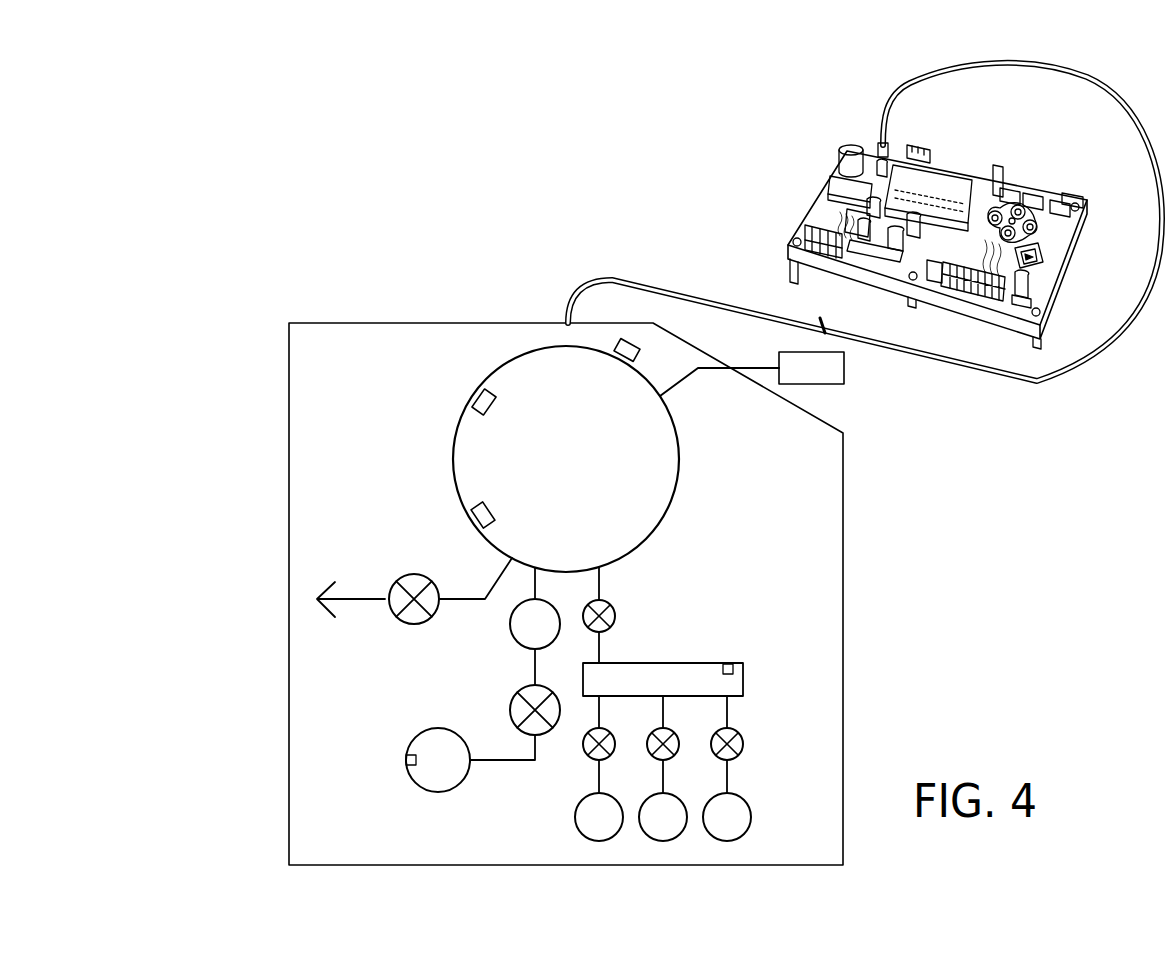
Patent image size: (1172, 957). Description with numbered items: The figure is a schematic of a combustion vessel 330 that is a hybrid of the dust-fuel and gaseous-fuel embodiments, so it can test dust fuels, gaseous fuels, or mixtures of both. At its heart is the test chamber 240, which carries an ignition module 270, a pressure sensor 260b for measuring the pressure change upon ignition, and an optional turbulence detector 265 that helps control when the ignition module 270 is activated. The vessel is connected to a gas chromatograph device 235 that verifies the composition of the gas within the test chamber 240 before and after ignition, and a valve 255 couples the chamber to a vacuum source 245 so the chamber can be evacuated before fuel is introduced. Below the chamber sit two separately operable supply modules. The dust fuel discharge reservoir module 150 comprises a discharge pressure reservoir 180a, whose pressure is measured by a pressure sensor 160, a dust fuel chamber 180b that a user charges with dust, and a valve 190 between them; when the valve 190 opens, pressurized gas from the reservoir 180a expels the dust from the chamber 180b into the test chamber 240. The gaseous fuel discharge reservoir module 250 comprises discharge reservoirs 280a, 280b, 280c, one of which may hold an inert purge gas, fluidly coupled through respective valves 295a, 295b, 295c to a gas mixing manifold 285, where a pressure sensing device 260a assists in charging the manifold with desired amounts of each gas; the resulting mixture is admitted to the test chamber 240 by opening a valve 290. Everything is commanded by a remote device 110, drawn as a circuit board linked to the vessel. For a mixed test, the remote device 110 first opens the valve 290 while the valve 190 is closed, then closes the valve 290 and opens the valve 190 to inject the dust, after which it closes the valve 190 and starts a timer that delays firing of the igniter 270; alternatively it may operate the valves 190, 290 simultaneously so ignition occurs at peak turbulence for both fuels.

The remote device 110 is at (1065, 156).
The combustion vessel 330 is at (240, 370).
The test chamber 240 is at (657, 512).
The pressure sensor 260b is at (478, 396).
The ignition module 270 is at (470, 518).
The turbulence detector 265 is at (628, 344).
The gas chromatograph device 235 is at (835, 385).
The vacuum source 245 is at (360, 600).
The valve 255 is at (415, 619).
The dust fuel chamber 180b is at (510, 627).
The dust fuel discharge reservoir module 150 is at (488, 673).
The valve 190 is at (510, 698).
The discharge pressure reservoir 180a is at (436, 790).
The pressure sensor 160 is at (406, 760).
The gaseous fuel discharge reservoir module 250 is at (750, 592).
The valve 290 is at (618, 610).
The gas mixing manifold 285 is at (745, 685).
The pressure sensing device 260a is at (727, 663).
The valve 295a is at (584, 757).
The valve 295b is at (676, 732).
The valve 295c is at (745, 752).
The discharge reservoir 280a is at (575, 813).
The discharge reservoir 280b is at (652, 841).
The discharge reservoir 280c is at (752, 812).